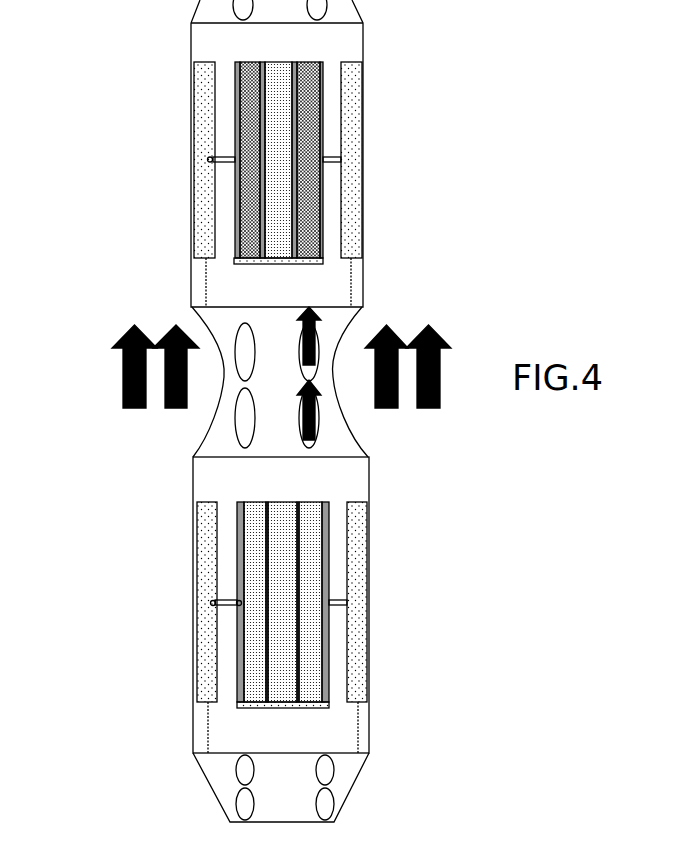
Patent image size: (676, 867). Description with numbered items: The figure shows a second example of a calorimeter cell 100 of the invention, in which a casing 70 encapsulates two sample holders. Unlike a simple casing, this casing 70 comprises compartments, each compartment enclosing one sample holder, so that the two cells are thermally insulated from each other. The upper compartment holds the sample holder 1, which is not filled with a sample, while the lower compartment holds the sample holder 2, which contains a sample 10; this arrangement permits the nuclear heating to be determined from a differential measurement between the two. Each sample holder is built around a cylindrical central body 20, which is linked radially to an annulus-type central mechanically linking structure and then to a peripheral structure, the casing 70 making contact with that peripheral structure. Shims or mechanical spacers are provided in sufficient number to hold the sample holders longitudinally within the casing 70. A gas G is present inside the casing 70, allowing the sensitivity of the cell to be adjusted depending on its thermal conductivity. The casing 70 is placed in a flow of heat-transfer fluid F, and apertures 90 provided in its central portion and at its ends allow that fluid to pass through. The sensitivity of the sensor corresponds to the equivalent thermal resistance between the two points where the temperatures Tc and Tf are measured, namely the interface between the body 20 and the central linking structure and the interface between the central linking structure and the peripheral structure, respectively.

The sample holder 1 is at (227, 282).
The sample holder 2 is at (233, 725).
The sample 10 is at (247, 185).
The cylindrical central body 20 is at (318, 220).
The casing 70 is at (363, 35).
The apertures 90 is at (323, 810).
The calorimeter cell 100 is at (170, 455).
The gas G is at (207, 43).
The temperature at body/central structure interface Tc is at (233, 600).
The temperature at central structure/peripheral structure interface Tf is at (211, 603).
The flow of heat-transfer fluid F is at (288, 373).